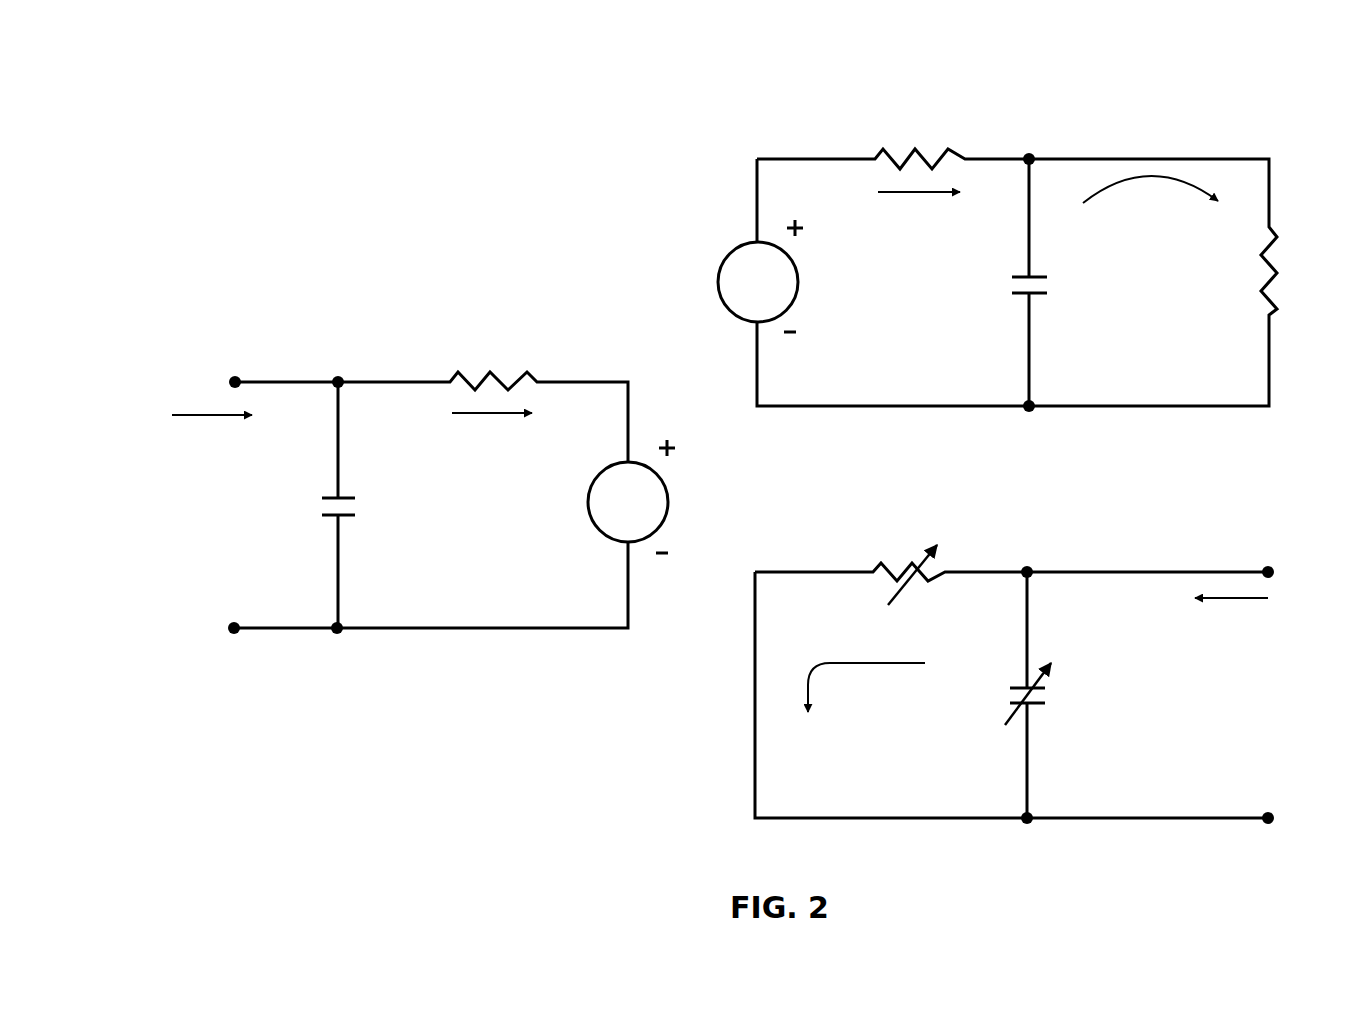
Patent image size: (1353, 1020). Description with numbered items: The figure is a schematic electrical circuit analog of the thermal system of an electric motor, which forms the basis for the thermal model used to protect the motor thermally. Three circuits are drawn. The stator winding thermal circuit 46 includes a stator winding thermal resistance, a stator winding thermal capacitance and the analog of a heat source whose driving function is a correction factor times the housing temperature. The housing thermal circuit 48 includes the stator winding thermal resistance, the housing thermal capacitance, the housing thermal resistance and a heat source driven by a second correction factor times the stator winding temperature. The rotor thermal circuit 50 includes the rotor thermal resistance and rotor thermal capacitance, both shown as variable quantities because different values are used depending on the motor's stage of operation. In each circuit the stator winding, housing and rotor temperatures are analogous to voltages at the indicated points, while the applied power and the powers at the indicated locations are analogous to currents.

The stator winding thermal circuit 46 is at (310, 667).
The housing thermal circuit 48 is at (1131, 106).
The rotor thermal circuit 50 is at (1128, 855).